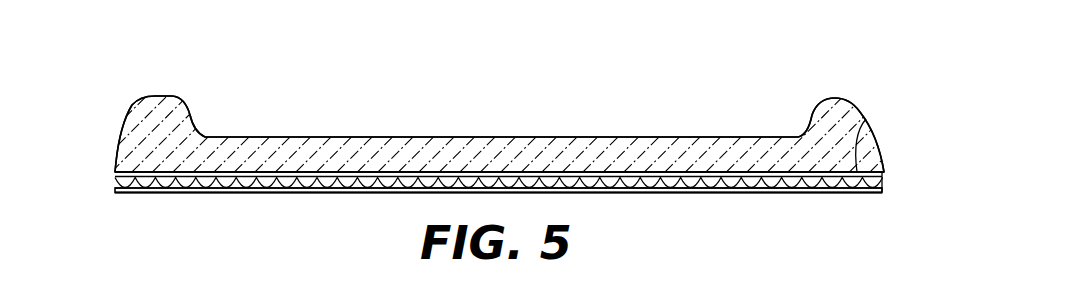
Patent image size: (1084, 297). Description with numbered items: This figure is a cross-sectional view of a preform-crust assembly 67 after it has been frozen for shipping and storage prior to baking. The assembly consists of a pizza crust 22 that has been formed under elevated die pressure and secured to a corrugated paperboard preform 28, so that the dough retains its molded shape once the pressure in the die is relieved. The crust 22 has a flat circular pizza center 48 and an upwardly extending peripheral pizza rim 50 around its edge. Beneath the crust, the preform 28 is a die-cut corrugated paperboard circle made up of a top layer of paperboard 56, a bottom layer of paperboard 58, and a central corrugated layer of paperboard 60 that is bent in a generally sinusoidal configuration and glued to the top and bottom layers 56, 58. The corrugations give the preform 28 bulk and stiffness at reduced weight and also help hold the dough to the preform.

The pizza crust 22 is at (367, 137).
The corrugated paperboard preform 28 is at (773, 196).
The pizza center 48 is at (728, 137).
The peripheral pizza rim 50 is at (150, 96).
The top layer of paperboard 56 is at (866, 119).
The bottom layer of paperboard 58 is at (868, 195).
The central corrugated layer of paperboard 60 is at (882, 184).
The preform-crust assembly 67 is at (530, 111).